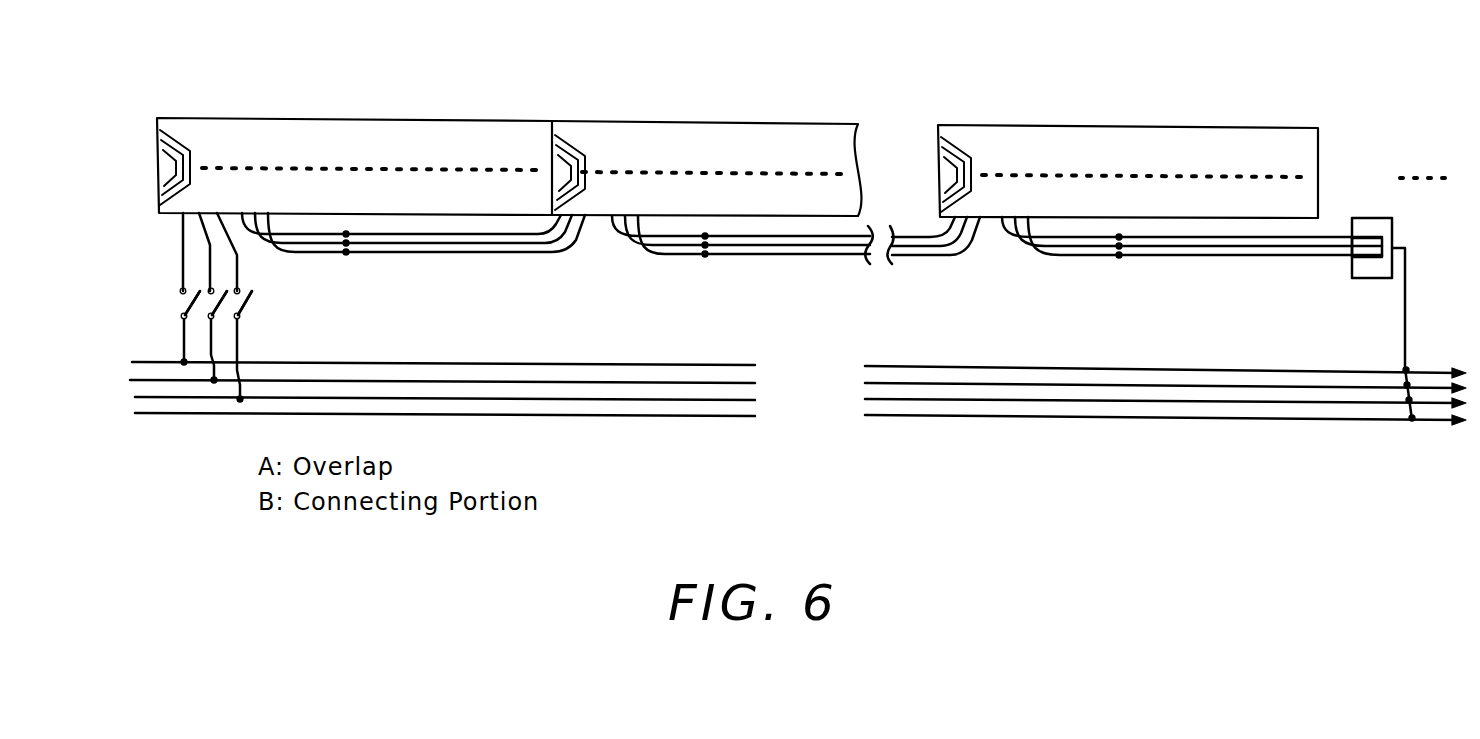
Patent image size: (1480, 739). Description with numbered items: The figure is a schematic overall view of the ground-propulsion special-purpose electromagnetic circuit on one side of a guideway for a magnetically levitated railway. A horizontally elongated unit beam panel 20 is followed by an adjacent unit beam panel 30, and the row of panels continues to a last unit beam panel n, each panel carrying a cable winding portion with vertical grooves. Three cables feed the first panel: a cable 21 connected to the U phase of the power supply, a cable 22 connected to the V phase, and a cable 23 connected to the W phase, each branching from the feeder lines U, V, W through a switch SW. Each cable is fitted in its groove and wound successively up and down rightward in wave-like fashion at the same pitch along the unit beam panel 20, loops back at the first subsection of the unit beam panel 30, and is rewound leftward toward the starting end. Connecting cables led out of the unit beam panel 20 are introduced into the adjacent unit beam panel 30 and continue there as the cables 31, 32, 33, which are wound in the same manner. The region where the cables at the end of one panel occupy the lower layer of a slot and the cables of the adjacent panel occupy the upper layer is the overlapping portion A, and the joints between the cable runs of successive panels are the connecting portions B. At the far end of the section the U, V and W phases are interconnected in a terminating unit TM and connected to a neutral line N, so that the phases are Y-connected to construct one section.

The unit beam panel 20 is at (366, 118).
The unit beam panel 30 is at (705, 122).
The n-th stator unit n is at (1125, 125).
The cable 21 is at (183, 230).
The cable 22 is at (207, 250).
The cable 23 is at (240, 262).
The connecting wire 31 is at (543, 239).
The cable 32 is at (507, 246).
The cable 33 is at (462, 255).
The switch SW is at (250, 304).
The terminating unit TM is at (1392, 223).
The overlapping portion A is at (169, 122).
The connecting portion B is at (349, 268).
The feeder line (U phase) U is at (788, 356).
The feeder line (V phase) V is at (788, 374).
The feeder line (W phase) W is at (786, 391).
The neutral line N is at (788, 410).